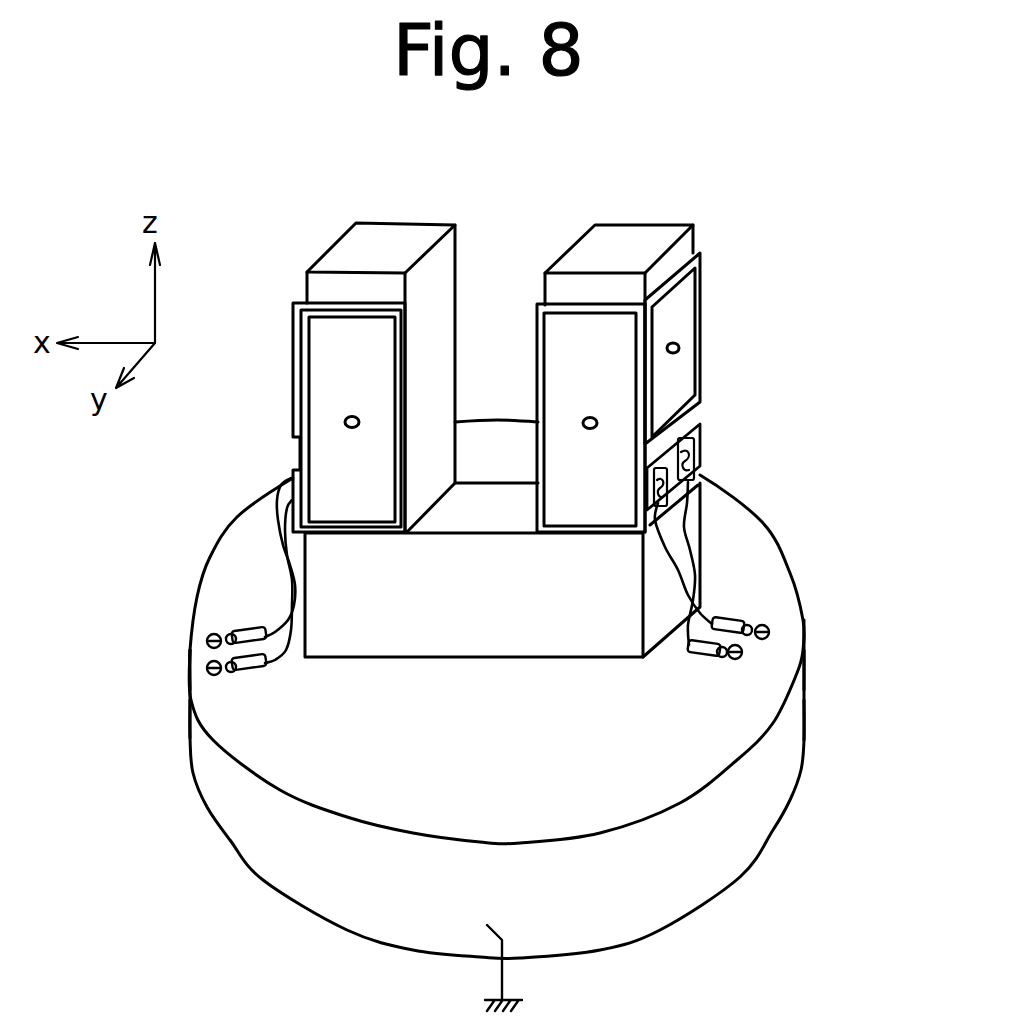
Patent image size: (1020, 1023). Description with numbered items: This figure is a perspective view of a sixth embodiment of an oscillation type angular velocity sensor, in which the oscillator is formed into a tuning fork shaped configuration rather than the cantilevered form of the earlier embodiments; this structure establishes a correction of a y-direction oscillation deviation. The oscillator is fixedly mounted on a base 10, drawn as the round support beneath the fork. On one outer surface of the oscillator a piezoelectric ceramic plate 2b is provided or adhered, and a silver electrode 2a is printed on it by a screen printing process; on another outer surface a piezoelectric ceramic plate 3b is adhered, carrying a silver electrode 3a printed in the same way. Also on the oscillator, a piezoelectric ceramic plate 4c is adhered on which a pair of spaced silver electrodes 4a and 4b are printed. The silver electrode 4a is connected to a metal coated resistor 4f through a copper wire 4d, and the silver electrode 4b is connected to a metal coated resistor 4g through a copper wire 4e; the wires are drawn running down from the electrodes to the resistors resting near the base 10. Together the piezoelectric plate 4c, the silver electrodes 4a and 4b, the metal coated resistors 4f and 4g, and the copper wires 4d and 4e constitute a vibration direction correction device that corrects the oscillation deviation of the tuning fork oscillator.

The silver electrode 2a is at (685, 325).
The piezoelectric ceramic plate 2b is at (702, 280).
The silver electrode 3a is at (565, 397).
The piezoelectric ceramic plate 3b is at (537, 327).
The silver electrode 4a is at (640, 570).
The silver electrode 4b is at (690, 450).
The piezoelectric ceramic plate 4c is at (700, 430).
The copper wire 4d is at (677, 583).
The copper wire 4e is at (655, 580).
The metal coated resistor 4f is at (703, 650).
The metal coated resistor 4g is at (730, 623).
The base 10 is at (793, 745).